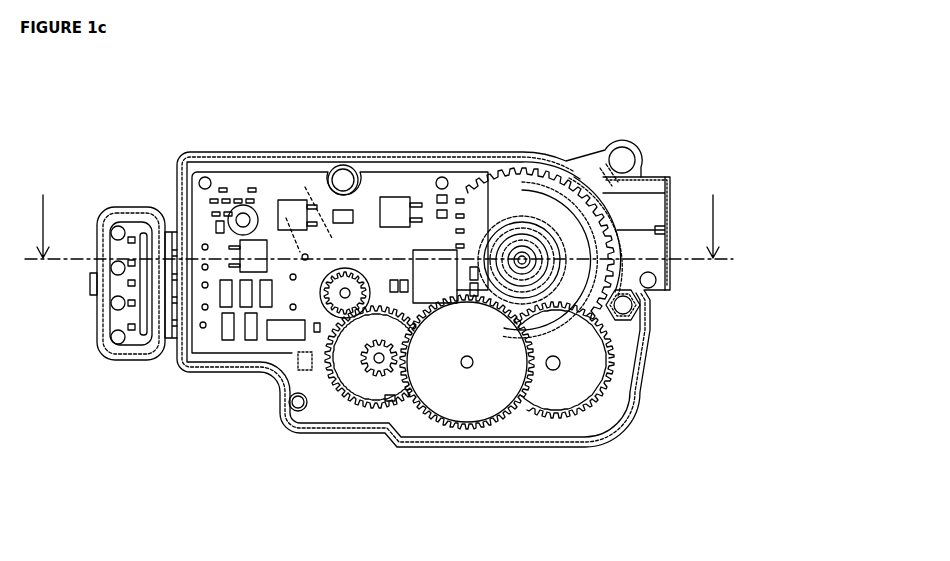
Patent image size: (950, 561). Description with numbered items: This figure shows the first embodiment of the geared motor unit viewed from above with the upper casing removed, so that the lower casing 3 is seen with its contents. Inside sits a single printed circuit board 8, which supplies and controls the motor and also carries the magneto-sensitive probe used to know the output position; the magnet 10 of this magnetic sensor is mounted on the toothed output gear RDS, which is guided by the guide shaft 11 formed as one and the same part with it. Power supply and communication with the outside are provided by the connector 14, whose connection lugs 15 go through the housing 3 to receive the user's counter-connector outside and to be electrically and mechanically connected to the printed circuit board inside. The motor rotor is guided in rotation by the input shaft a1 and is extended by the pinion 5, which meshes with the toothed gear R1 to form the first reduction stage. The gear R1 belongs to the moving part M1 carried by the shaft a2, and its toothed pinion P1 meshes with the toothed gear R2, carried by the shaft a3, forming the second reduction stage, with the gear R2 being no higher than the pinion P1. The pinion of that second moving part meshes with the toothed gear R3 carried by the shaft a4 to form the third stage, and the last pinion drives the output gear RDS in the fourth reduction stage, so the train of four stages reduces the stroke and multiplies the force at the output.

The lower casing 3 is at (180, 155).
The printed circuit board 8 is at (302, 185).
The pinion 5 is at (350, 288).
The guide shaft 11 is at (520, 256).
The magnet 10 is at (512, 208).
The toothed output gear RDS is at (535, 175).
The connector 14 is at (110, 351).
The connection lugs 15 is at (201, 328).
The input shaft a1 is at (341, 297).
The guide shaft a2 is at (374, 358).
The toothed pinion P1 is at (377, 372).
The toothed gear R1 is at (385, 394).
The moving part M1 is at (338, 500).
The toothed gear R2 is at (453, 410).
The guide shaft a3 is at (467, 369).
The toothed gear R3 is at (538, 405).
The guide shaft a4 is at (559, 370).